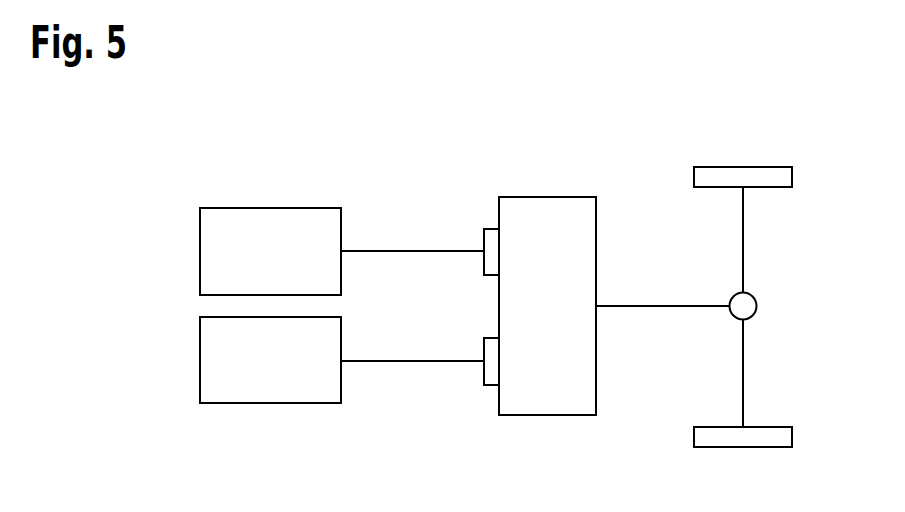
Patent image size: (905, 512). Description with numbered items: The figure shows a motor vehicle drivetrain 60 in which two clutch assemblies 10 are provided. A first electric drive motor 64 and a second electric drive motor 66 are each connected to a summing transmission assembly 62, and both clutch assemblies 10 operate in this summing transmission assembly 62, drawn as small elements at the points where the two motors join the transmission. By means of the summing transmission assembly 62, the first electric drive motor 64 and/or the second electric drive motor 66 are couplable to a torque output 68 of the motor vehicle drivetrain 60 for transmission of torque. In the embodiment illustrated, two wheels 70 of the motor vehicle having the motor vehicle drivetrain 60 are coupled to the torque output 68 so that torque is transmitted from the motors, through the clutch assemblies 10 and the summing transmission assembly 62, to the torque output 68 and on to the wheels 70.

The motor vehicle drivetrain 60 is at (386, 200).
The summing transmission assembly 62 is at (586, 183).
The first electric drive motor 64 is at (268, 208).
The second electric drive motor 66 is at (262, 403).
The clutch assembly 10 is at (490, 240).
The torque output 68 is at (768, 286).
The wheel 70 is at (795, 178).